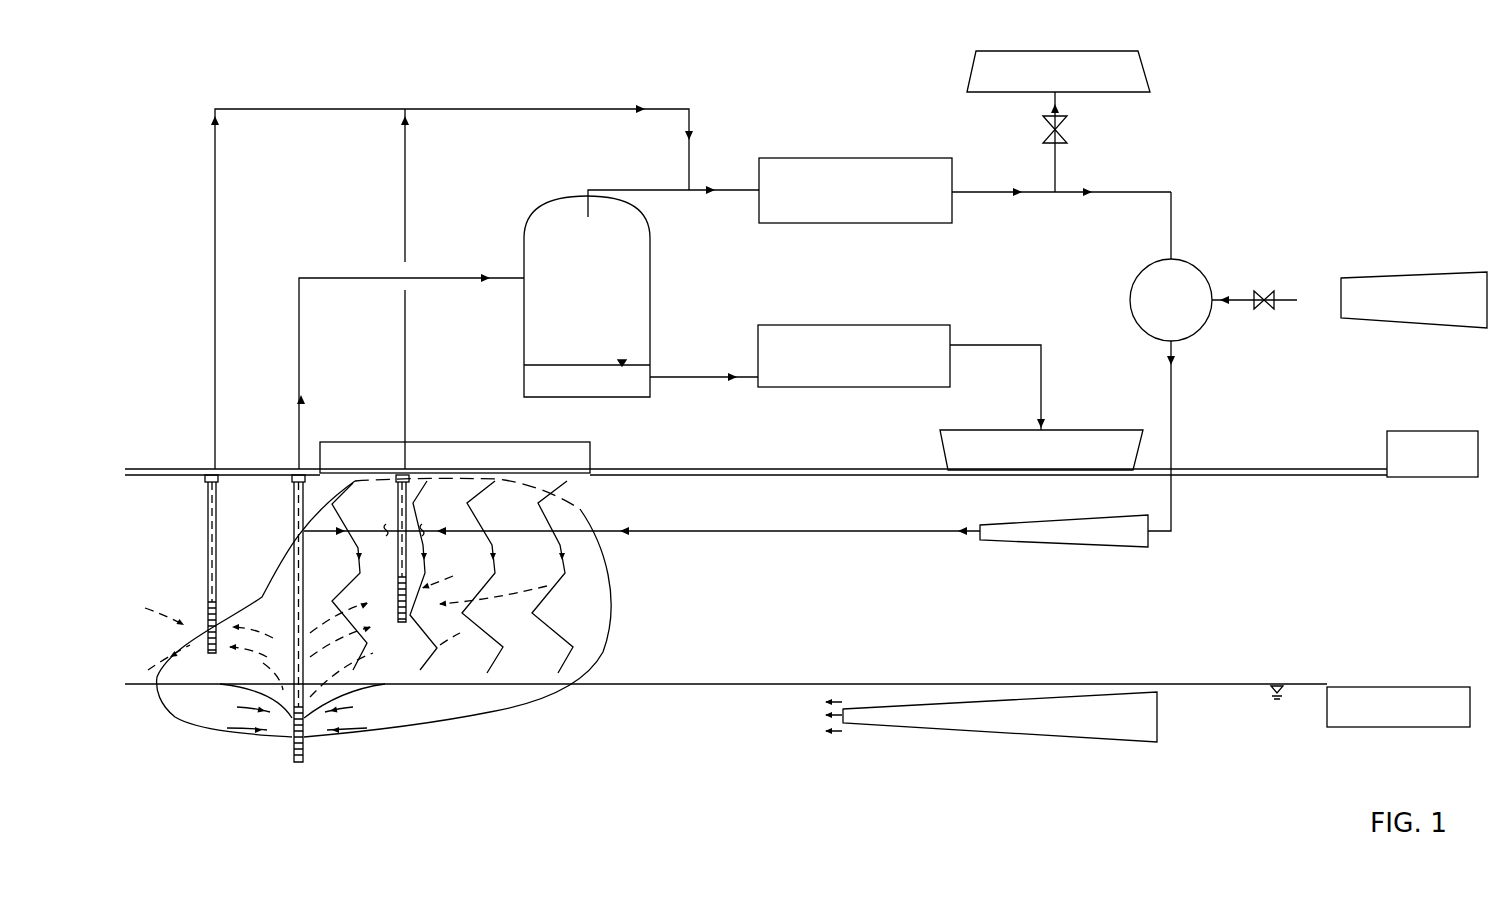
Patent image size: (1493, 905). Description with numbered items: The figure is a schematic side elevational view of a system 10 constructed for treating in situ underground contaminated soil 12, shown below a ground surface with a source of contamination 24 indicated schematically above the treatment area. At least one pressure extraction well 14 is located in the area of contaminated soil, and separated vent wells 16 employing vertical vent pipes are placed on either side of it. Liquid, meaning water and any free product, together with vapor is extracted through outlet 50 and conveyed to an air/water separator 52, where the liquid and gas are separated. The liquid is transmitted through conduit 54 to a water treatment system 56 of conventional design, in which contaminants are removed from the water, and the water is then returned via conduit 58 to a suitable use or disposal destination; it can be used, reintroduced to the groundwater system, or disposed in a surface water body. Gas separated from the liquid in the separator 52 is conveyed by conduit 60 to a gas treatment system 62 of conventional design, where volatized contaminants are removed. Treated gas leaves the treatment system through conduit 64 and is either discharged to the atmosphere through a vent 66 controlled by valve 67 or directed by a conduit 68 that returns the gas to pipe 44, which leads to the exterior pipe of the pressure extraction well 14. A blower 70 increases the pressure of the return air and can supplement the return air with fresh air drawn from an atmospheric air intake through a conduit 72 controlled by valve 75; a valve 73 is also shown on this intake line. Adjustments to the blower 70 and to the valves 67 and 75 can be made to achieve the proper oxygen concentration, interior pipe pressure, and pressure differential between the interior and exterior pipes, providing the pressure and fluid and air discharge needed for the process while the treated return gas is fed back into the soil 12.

The system 10 is at (432, 735).
The contaminated soil 12 is at (604, 652).
The pressure extraction well 14 is at (304, 745).
The vent wells 16 is at (208, 525).
The source of contamination 24 is at (537, 442).
The pipe 44 is at (1172, 397).
The outlet 50 is at (299, 355).
The air/water separator 52 is at (652, 280).
The conduit 54 is at (675, 376).
The water treatment system 56 is at (800, 335).
The conduit 58 is at (963, 345).
The conduit 60 is at (588, 190).
The gas treatment system 62 is at (800, 170).
The conduit 64 is at (967, 190).
The vent 66 is at (1057, 178).
The valve 67 is at (1062, 118).
The conduit 68 is at (1172, 215).
The blower 70 is at (1208, 278).
The conduit 72 is at (1222, 305).
The air intake valve 73 is at (1288, 298).
The valve 75 is at (1268, 310).